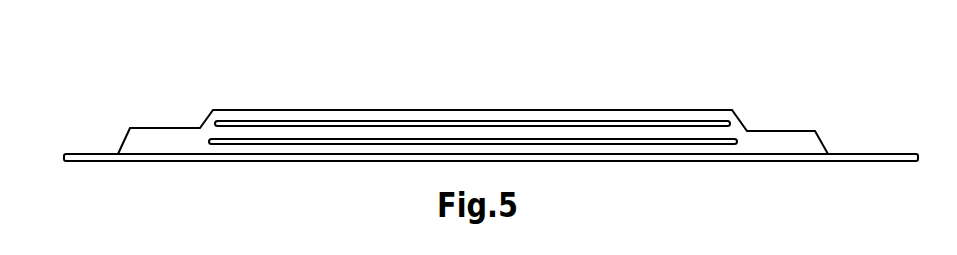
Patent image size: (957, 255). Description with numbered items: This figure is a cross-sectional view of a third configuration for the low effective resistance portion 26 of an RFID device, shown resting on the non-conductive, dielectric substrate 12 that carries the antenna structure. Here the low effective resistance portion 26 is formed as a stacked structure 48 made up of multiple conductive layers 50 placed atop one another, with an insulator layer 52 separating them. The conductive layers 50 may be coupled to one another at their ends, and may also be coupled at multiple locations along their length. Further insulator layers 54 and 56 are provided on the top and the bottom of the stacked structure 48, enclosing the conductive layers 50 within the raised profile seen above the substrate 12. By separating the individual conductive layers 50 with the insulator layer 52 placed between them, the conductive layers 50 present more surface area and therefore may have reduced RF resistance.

The non-conductive substrate 12 is at (93, 155).
The low effective resistance portion 26 is at (156, 96).
The stacked structure 48 is at (216, 69).
The conductive layers 50 is at (418, 141).
The insulator layer 52 is at (470, 133).
The top insulator layer 54 is at (690, 118).
The bottom insulator layer 56 is at (676, 148).